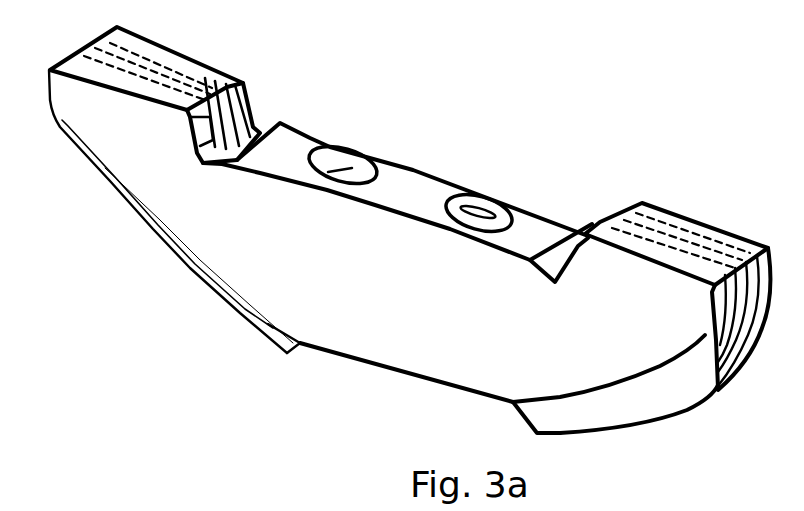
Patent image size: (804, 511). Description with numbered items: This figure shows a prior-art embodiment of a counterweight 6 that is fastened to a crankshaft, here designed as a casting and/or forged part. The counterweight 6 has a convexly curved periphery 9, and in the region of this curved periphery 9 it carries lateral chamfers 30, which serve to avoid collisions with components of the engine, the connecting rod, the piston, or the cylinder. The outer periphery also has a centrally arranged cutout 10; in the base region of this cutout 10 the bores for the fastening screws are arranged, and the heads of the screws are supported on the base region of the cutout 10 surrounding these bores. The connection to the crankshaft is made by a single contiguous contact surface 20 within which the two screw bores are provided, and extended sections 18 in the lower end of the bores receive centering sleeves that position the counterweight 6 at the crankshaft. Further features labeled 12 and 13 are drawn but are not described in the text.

The counterweight 6 is at (447, 326).
The convexly curved periphery 9 is at (615, 430).
The cutout 10 is at (409, 261).
The openings 12 is at (351, 150).
The left end clip block 13 is at (253, 84).
The extended sections 18 is at (356, 160).
The contact surface 20 is at (407, 202).
The lateral chamfers 30 is at (670, 393).